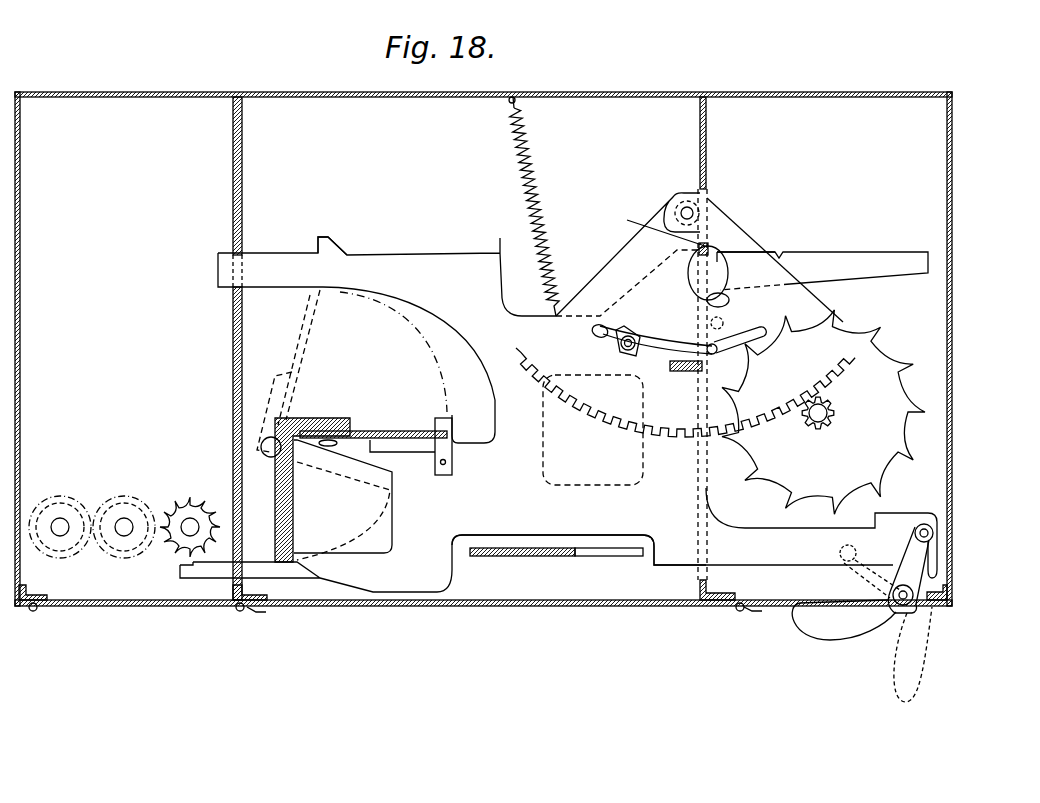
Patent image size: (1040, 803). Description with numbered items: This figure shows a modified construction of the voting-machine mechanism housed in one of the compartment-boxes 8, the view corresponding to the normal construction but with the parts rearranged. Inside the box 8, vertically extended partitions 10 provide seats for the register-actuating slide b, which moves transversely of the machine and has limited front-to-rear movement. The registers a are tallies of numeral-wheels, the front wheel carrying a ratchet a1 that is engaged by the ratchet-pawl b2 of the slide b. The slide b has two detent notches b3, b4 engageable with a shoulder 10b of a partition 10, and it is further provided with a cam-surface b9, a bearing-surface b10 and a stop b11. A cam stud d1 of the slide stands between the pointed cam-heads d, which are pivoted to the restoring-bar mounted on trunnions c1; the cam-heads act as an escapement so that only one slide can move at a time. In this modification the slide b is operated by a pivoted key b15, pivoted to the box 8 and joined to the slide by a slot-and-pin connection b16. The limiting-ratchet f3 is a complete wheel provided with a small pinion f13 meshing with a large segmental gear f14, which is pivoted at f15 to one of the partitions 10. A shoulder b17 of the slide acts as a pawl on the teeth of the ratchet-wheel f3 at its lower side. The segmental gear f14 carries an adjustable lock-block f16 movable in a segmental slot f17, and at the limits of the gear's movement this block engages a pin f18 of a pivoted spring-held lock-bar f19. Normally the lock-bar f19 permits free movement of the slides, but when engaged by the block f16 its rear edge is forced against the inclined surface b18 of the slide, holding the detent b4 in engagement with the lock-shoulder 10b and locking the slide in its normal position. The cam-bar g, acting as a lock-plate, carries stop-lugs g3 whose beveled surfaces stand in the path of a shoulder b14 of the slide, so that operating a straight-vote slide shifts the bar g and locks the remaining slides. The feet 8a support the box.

The compartment-box 8 is at (952, 219).
The casing feet 8a is at (250, 612).
The partition 10 is at (242, 187).
The shoulder 10b is at (663, 228).
The register a is at (185, 520).
The ratchet a1 is at (197, 500).
The register-actuating slide b is at (387, 367).
The ratchet-pawl b2 is at (217, 572).
The notch b3 is at (780, 253).
The notch b4 is at (710, 262).
The cam-surface b9 is at (293, 567).
The bearing-surface b10 is at (393, 515).
The stop b11 is at (330, 235).
The shoulder b14 is at (656, 552).
The pivoted key b15 is at (845, 627).
The slot and pin connection b16 is at (928, 562).
The shoulder b17 is at (880, 513).
The inclined surface b18 is at (748, 248).
The trunnion c1 is at (272, 460).
The cam-head d is at (367, 430).
The cam stud d1 is at (447, 420).
The limiting-ratchet f3 is at (880, 393).
The pinion f13 is at (823, 430).
The segmental gear f14 is at (627, 405).
The pivot f15 is at (685, 208).
The lock-block f16 is at (637, 355).
The segmental slot f17 is at (602, 335).
The pin f18 is at (768, 330).
The lock-bar f19 is at (777, 270).
The cam-bar g is at (518, 556).
The stop-lug g3 is at (603, 556).